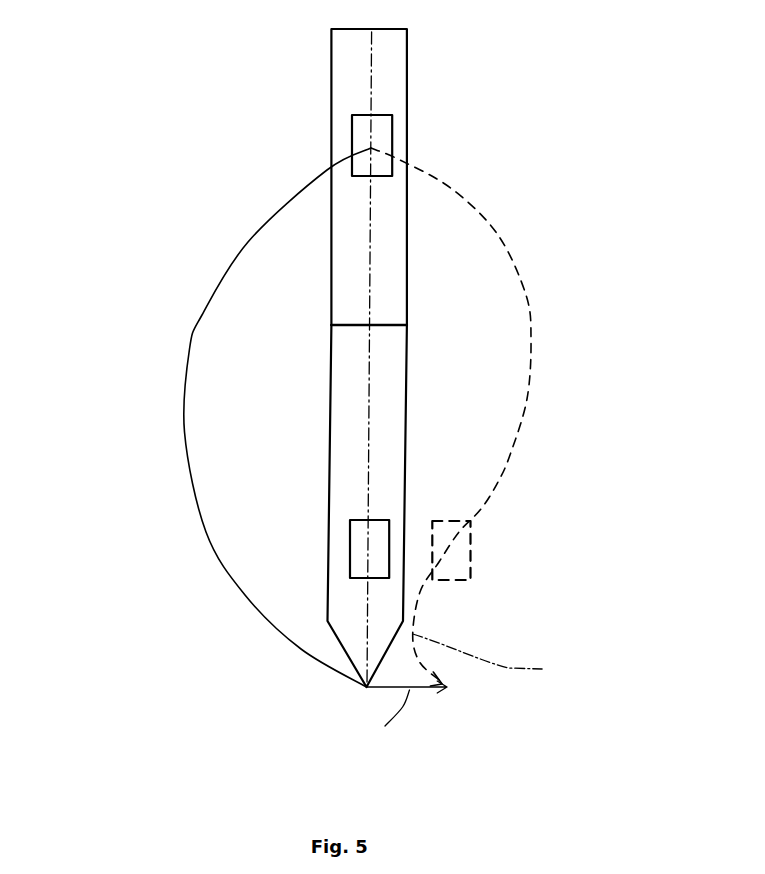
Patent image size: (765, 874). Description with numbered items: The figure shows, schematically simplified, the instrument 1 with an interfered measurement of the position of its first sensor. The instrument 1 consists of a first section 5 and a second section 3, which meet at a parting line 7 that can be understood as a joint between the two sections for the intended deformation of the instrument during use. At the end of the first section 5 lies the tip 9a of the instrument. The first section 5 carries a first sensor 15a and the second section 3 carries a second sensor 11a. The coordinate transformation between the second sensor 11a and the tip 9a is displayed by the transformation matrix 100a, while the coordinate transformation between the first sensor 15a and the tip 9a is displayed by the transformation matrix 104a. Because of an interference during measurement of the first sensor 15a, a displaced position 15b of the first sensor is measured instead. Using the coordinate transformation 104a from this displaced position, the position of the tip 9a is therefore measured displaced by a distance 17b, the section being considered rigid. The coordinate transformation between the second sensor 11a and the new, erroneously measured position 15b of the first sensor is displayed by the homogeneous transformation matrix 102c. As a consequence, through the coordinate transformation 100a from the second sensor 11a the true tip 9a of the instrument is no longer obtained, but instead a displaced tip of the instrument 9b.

The instrument 1 is at (253, 146).
The second section 3 is at (323, 52).
The first section 5 is at (322, 393).
The parting line 7 is at (333, 318).
The tip of the instrument 9a is at (358, 679).
The displaced tip of the instrument 9b is at (424, 693).
The second sensor 11a is at (344, 119).
The first sensor 15a is at (342, 529).
The displaced position of the first sensor 15b is at (463, 562).
The distance 17b is at (377, 718).
The transformation matrix 100a is at (193, 309).
The homogeneous transformation matrix 102c is at (519, 394).
The transformation matrix 104a is at (502, 659).